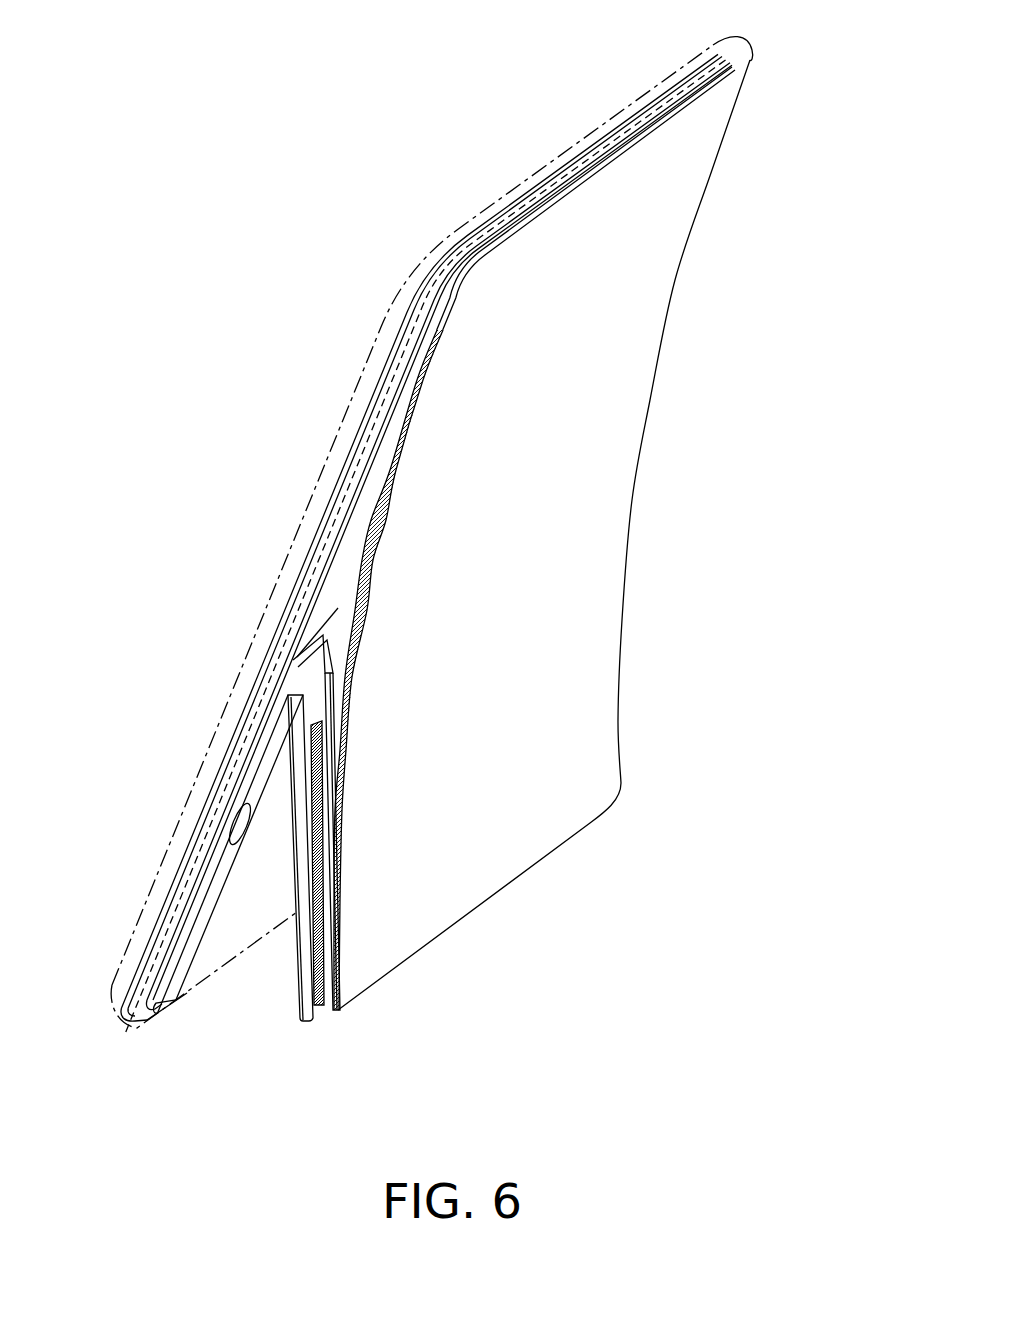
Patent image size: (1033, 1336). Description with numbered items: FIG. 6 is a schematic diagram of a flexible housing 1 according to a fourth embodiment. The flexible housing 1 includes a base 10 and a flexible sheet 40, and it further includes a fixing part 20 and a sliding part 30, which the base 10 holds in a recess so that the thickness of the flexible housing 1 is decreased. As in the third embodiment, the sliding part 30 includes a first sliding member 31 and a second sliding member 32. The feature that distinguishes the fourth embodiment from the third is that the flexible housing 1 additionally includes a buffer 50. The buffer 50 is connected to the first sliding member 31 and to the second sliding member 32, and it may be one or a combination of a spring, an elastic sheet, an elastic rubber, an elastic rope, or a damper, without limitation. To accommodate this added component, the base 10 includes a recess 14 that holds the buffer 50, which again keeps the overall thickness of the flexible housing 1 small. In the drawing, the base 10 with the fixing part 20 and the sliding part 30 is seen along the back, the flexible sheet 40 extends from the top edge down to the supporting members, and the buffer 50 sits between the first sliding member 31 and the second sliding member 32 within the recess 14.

The flexible housing 1 is at (493, 134).
The base 10 is at (338, 443).
The recess 14 is at (237, 847).
The fixing part 20 is at (353, 535).
The sliding part 30 is at (162, 634).
The first sliding member 31 is at (310, 673).
The second sliding member 32 is at (312, 766).
The flexible sheet 40 is at (493, 850).
The buffer 50 is at (320, 768).